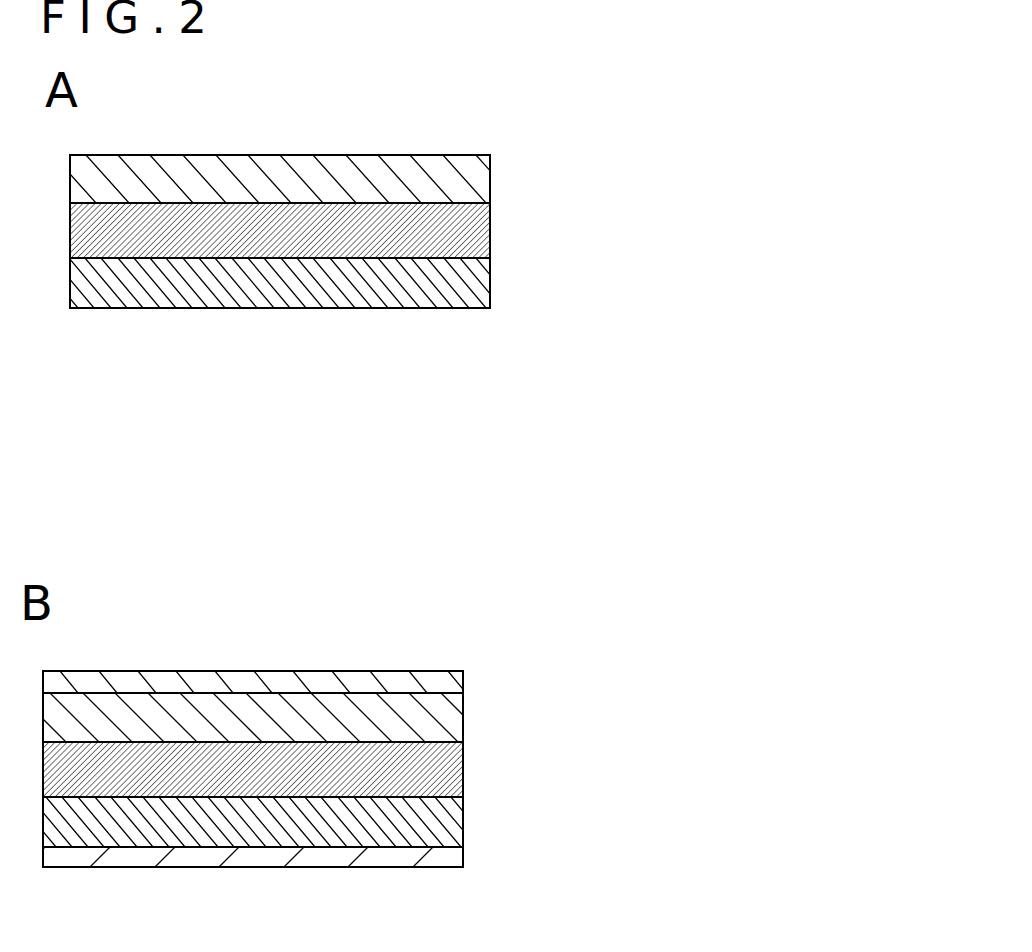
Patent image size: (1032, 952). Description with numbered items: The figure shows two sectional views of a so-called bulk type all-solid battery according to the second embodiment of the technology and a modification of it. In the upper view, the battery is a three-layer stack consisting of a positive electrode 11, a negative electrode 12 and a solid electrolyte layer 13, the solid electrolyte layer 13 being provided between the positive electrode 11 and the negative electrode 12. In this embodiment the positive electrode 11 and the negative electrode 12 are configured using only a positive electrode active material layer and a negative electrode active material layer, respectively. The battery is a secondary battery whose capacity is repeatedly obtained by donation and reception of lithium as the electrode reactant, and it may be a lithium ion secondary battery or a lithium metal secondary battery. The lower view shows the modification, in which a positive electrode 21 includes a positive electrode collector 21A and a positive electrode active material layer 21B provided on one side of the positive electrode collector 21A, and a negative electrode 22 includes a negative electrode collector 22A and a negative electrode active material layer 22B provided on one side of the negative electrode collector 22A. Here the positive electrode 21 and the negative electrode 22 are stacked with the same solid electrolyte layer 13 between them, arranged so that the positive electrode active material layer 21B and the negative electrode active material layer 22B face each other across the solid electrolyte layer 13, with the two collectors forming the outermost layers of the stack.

In FIG. 2A, the positive electrode 11 is at (487, 280).
In FIG. 2A, the negative electrode 12 is at (487, 175).
In FIG. 2A, the solid electrolyte layer 13 is at (487, 228).
In FIG. 2B, the solid electrolyte layer 13 is at (463, 764).
In FIG. 2B, the positive electrode 21 is at (466, 841).
In FIG. 2B, the positive electrode collector 21A is at (463, 852).
In FIG. 2B, the positive electrode active material layer 21B is at (463, 817).
In FIG. 2B, the negative electrode 22 is at (466, 701).
In FIG. 2B, the negative electrode collector 22A is at (463, 677).
In FIG. 2B, the negative electrode active material layer 22B is at (463, 713).